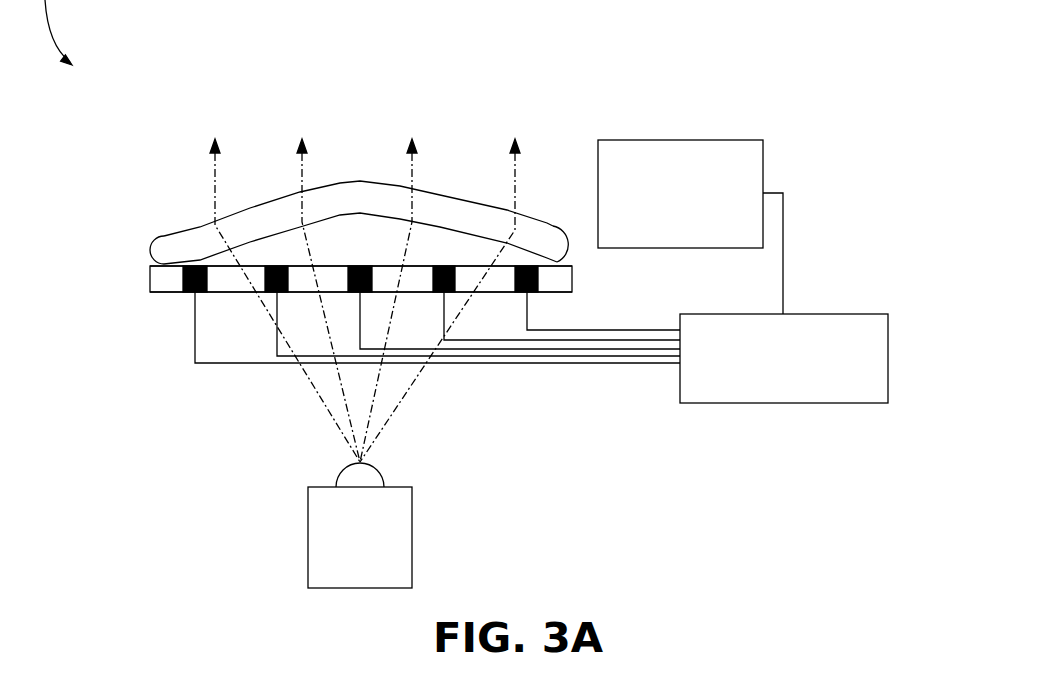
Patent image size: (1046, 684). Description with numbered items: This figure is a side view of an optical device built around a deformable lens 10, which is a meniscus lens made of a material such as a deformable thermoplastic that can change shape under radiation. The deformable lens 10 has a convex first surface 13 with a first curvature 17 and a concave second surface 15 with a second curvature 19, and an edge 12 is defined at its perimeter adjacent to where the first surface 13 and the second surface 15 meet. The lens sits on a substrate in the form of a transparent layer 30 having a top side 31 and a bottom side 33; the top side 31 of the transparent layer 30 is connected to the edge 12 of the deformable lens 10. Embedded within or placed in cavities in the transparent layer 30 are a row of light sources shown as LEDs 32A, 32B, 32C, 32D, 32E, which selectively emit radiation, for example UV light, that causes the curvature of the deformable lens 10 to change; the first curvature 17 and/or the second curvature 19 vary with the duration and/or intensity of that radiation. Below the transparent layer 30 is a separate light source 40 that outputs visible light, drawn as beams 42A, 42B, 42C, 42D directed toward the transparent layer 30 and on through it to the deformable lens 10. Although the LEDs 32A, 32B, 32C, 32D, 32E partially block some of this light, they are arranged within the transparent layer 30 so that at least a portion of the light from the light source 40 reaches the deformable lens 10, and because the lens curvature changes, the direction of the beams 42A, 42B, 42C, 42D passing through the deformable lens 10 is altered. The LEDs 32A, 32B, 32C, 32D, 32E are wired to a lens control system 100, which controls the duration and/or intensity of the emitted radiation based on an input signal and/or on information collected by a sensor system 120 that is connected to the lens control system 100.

The deformable lens 10 is at (467, 205).
The edge 12 is at (162, 247).
The first surface 13 is at (378, 184).
The second surface 15 is at (317, 200).
The first curvature 17 is at (444, 198).
The second curvature 19 is at (252, 232).
The transparent layer 30 is at (160, 285).
The top side 31 is at (227, 266).
The bottom side 33 is at (171, 293).
The LED 32A is at (203, 264).
The LED 32B is at (283, 268).
The LED 32C is at (367, 264).
The LED 32D is at (448, 264).
The LED 32E is at (523, 264).
The light source 40 is at (400, 535).
The beam 42A is at (317, 392).
The beam 42B is at (348, 418).
The beam 42C is at (375, 412).
The beam 42D is at (410, 388).
The lens control system 100 is at (888, 358).
The sensor system 120 is at (763, 158).